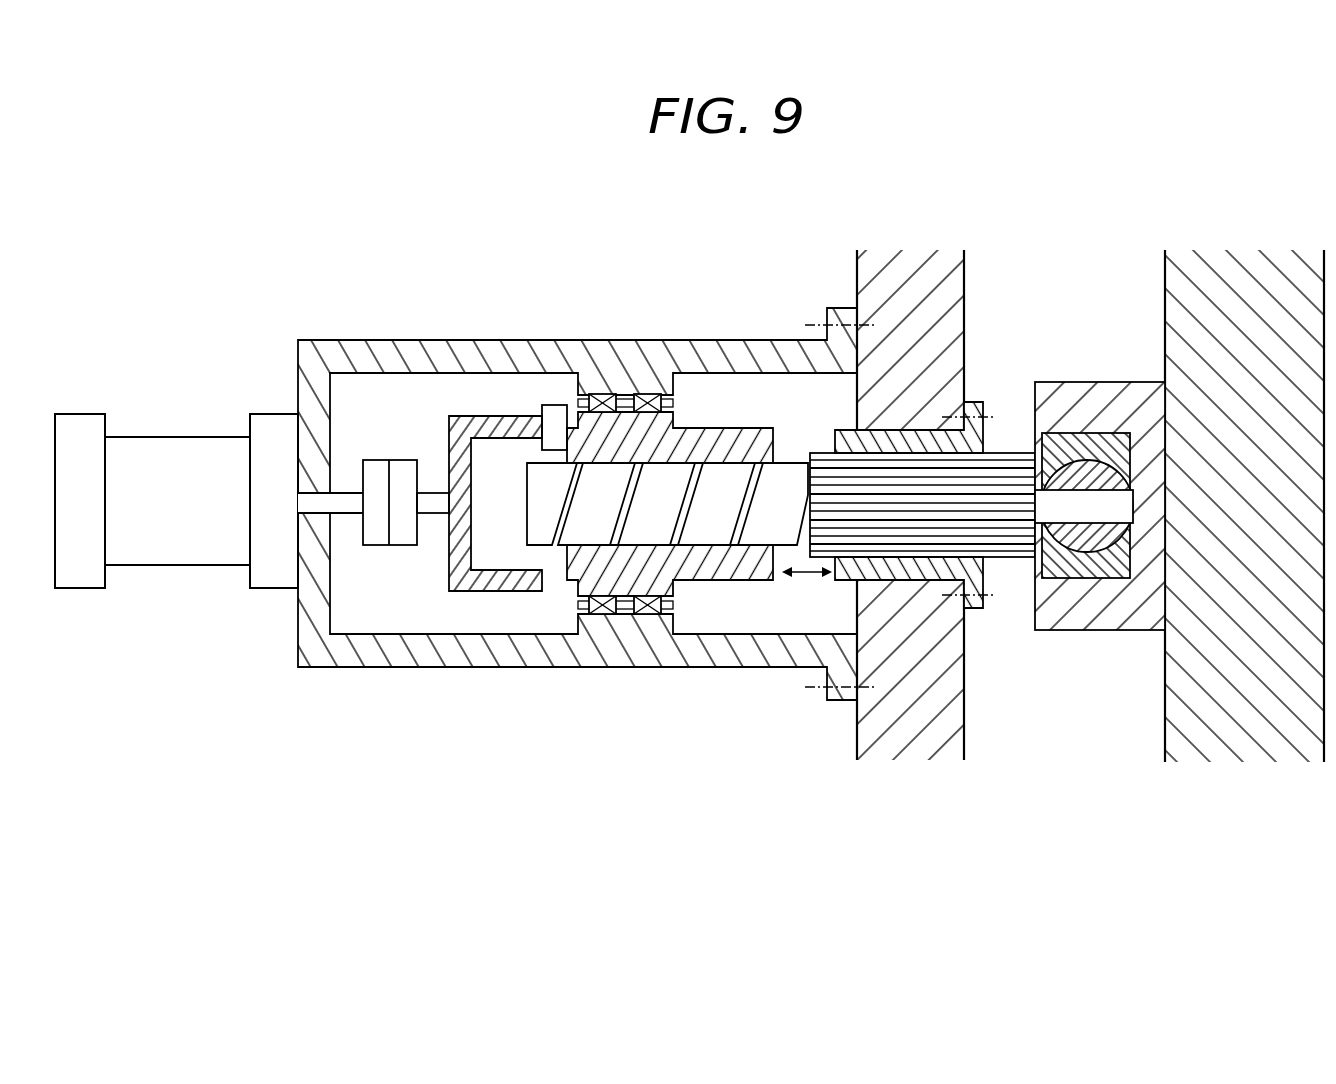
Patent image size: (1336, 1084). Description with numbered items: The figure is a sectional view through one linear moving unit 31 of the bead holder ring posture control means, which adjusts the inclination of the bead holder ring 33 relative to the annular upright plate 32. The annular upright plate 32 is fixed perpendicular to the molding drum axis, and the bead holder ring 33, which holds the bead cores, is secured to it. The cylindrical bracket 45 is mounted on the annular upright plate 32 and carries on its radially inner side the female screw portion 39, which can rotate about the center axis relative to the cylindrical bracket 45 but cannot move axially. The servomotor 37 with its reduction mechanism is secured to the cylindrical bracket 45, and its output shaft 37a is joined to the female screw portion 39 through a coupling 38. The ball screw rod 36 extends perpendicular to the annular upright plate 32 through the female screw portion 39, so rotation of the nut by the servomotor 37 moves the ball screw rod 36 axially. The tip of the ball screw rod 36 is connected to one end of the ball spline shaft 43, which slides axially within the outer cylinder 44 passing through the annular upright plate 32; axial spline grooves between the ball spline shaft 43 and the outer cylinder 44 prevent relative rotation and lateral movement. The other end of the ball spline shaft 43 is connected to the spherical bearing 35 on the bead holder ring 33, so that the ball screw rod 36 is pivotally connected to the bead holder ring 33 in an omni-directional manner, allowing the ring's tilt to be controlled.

The linear moving unit 31 is at (599, 310).
The annular upright plate 32 is at (908, 280).
The bead holder ring 33 is at (1245, 295).
The spherical bearing 35 is at (1078, 477).
The ball screw rod 36 is at (707, 512).
The servomotor 37 is at (163, 458).
The output shaft 37a is at (348, 515).
The coupling 38 is at (395, 547).
The female screw portion 39 is at (577, 562).
The ball spline shaft 43 is at (1007, 540).
The outer cylinder 44 is at (900, 440).
The cylindrical bracket 45 is at (460, 340).